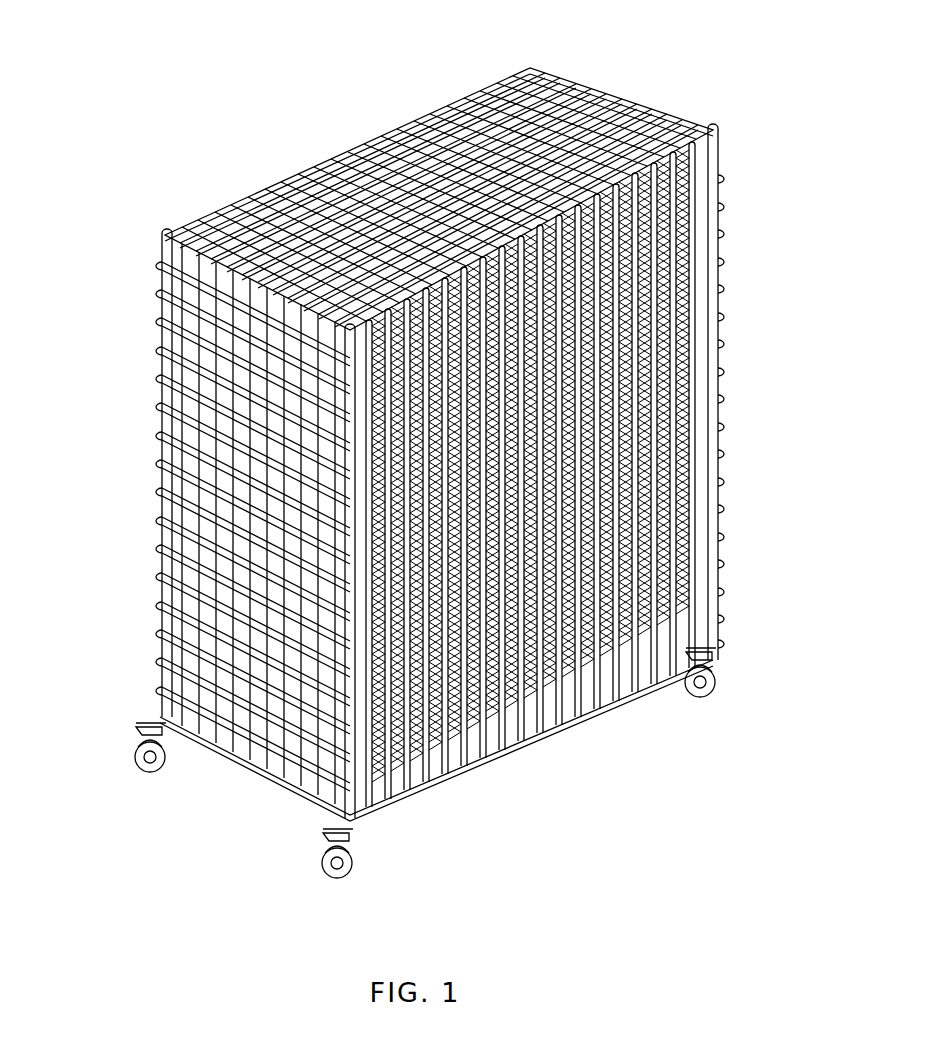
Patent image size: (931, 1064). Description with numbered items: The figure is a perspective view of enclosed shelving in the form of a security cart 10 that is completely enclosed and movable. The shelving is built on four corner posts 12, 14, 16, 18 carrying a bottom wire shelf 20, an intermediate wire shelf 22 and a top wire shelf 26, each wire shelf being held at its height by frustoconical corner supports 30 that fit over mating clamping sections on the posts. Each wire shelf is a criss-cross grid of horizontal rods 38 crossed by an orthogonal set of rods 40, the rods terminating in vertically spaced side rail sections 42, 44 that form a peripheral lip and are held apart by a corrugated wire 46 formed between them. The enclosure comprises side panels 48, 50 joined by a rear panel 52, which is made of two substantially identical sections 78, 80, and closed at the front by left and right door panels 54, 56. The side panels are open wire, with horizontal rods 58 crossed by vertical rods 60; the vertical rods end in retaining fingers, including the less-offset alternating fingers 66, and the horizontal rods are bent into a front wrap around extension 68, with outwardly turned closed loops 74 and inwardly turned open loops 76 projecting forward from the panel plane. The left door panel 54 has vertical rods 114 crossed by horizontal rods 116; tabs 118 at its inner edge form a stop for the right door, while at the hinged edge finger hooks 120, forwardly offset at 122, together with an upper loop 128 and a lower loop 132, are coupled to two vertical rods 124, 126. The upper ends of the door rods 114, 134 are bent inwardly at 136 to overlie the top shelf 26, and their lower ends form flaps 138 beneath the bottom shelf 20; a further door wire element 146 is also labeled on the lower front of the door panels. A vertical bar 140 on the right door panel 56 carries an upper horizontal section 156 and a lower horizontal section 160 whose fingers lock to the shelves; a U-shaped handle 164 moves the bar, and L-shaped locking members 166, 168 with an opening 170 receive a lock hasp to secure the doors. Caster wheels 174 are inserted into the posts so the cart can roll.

The security cart 10 is at (215, 118).
The corner post 12 is at (302, 642).
The corner post 14 is at (362, 872).
The corner post 16 is at (560, 85).
The corner post 18 is at (732, 180).
The bottom wire shelf 20 is at (227, 762).
The intermediate wire shelf 22 is at (252, 602).
The top wire shelf 26 is at (368, 170).
The frustoconical corner support 30 is at (162, 237).
The horizontal rods 38 is at (520, 72).
The orthogonal set of rods 40 is at (445, 120).
The side rail section 42 is at (277, 200).
The side rail section 44 is at (187, 228).
The corrugated wire 46 is at (262, 208).
The side panel 48 is at (302, 472).
The side panel 50 is at (735, 270).
The rear panel 52 is at (388, 125).
The left front door panel 54 is at (517, 752).
The right front door panel 56 is at (640, 712).
The horizontal rods 58 is at (217, 582).
The vertical rods 60 is at (207, 542).
The alternating fingers 66 is at (382, 366).
The wrap around extension 68 is at (728, 165).
The horizontally oriented loops 74 is at (740, 290).
The loops 76 is at (736, 202).
The back panel section 78 is at (235, 222).
The back panel section 80 is at (440, 110).
The vertical rods 114 is at (645, 680).
The horizontal rods 116 is at (580, 558).
The extending tabs 118 is at (540, 303).
The finger hooks 120 is at (740, 300).
The forward offset 122 is at (705, 308).
The vertical rod 124 is at (730, 642).
The vertical rod 126 is at (725, 662).
The loop 128 is at (736, 192).
The loop 132 is at (735, 622).
The vertical rods 134 is at (512, 762).
The inwardly bent upper flaps 136 is at (640, 165).
The lower flaps 138 is at (610, 722).
The vertical bar 140 is at (575, 692).
The lattice wire 146 is at (650, 368).
The inwardly directed horizontal section 156 is at (505, 250).
The inwardly directed horizontal section 160 is at (562, 702).
The U-shaped handle 164 is at (575, 482).
The L-shaped locking member 166 is at (600, 545).
The L-shaped locking member 168 is at (585, 500).
The opening 170 is at (560, 542).
The caster wheels 174 is at (140, 760).